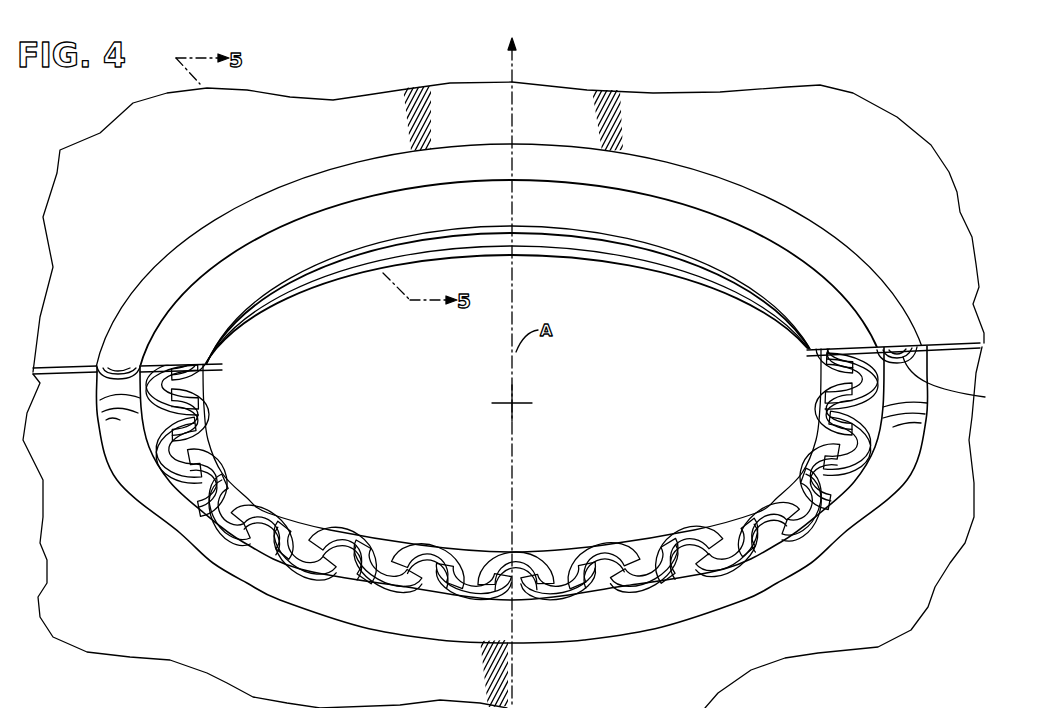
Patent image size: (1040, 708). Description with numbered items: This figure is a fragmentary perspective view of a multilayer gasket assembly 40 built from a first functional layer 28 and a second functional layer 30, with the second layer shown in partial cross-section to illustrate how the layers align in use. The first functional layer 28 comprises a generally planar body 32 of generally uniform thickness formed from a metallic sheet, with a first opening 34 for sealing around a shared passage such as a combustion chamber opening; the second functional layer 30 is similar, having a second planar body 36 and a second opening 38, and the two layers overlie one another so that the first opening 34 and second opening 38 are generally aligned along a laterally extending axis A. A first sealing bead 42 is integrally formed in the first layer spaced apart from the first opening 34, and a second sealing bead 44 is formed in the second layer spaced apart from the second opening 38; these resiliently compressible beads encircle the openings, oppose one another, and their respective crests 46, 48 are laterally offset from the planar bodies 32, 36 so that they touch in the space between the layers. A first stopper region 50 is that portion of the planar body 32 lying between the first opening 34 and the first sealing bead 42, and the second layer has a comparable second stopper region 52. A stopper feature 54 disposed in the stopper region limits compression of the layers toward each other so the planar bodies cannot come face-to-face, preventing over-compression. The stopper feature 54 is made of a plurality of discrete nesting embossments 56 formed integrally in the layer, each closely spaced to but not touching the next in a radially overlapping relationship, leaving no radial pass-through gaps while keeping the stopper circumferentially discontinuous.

The first functional layer 28 is at (983, 428).
The second functional layer 30 is at (978, 298).
The planar body 32 is at (965, 522).
The first opening 34 is at (680, 272).
The second planar body 36 is at (935, 228).
The second opening 38 is at (617, 238).
The gasket assembly 40 is at (905, 90).
The first sealing bead 42 is at (960, 400).
The second sealing bead 44 is at (796, 214).
The crest 46 is at (110, 407).
The crest 48 is at (965, 377).
The first stopper region 50 is at (827, 404).
The second stopper region 52 is at (248, 242).
The stopper feature 54 is at (218, 424).
The discrete nesting embossments 56 is at (288, 508).